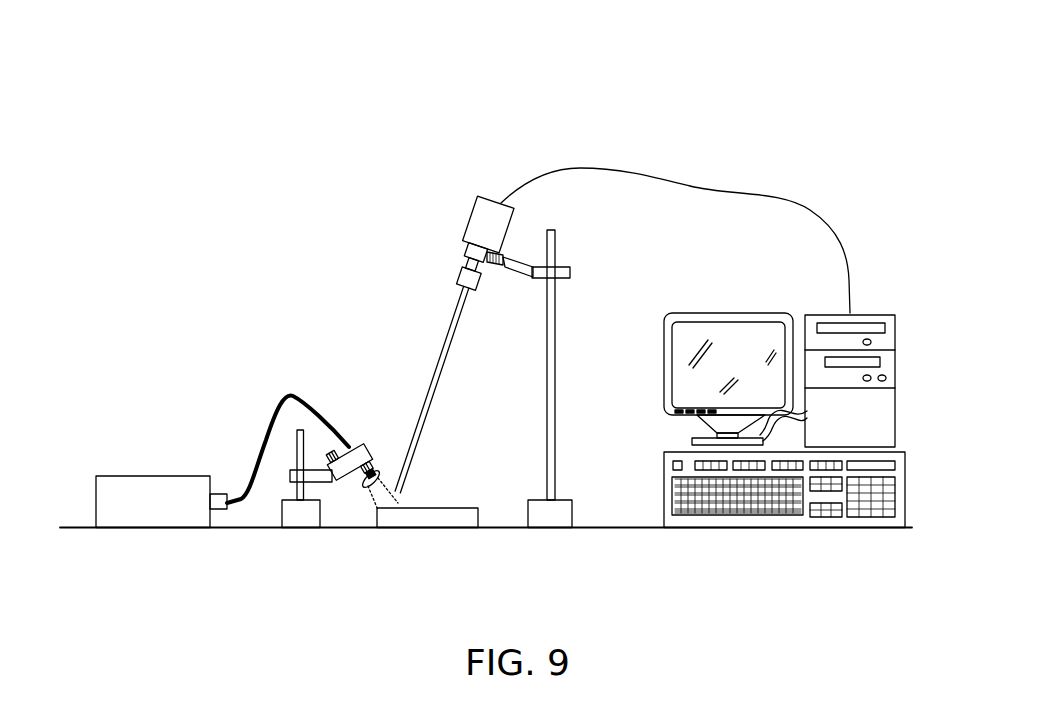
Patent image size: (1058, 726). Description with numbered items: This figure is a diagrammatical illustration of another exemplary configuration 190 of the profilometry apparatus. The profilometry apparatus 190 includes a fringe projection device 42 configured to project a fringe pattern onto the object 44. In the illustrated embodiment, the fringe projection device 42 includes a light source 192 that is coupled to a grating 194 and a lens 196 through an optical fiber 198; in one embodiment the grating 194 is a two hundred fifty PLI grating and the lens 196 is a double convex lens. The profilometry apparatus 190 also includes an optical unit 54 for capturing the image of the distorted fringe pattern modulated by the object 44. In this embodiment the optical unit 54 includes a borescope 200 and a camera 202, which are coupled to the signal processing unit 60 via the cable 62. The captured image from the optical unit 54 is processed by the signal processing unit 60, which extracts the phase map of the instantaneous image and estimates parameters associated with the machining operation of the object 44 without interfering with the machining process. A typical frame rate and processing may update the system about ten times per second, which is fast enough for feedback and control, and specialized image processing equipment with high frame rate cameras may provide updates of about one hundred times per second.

The exemplary configuration of the profilometry apparatus 190 is at (240, 87).
The fringe projection device 42 is at (236, 377).
The light source 192 is at (157, 476).
The grating 194 is at (350, 483).
The optical fiber 198 is at (302, 395).
The lens 196 is at (384, 467).
The object 44 is at (458, 521).
The optical unit 54 is at (421, 321).
The borescope 200 is at (437, 392).
The camera 202 is at (470, 223).
The signal processing unit 60 is at (728, 313).
The cable 62 is at (660, 176).